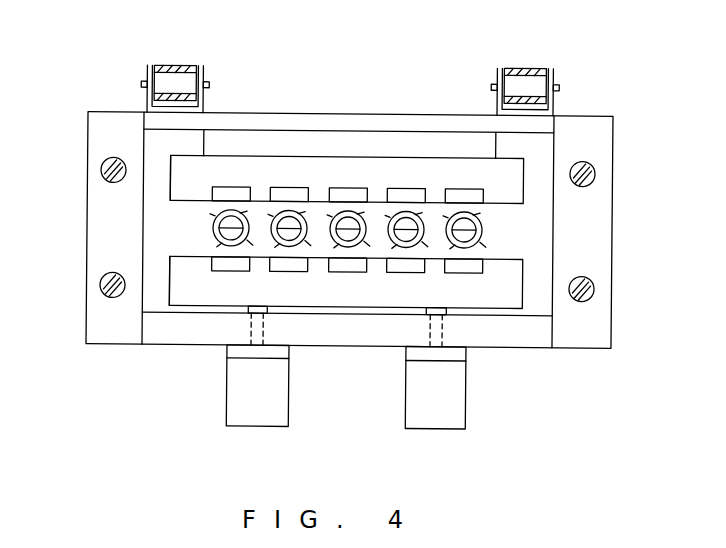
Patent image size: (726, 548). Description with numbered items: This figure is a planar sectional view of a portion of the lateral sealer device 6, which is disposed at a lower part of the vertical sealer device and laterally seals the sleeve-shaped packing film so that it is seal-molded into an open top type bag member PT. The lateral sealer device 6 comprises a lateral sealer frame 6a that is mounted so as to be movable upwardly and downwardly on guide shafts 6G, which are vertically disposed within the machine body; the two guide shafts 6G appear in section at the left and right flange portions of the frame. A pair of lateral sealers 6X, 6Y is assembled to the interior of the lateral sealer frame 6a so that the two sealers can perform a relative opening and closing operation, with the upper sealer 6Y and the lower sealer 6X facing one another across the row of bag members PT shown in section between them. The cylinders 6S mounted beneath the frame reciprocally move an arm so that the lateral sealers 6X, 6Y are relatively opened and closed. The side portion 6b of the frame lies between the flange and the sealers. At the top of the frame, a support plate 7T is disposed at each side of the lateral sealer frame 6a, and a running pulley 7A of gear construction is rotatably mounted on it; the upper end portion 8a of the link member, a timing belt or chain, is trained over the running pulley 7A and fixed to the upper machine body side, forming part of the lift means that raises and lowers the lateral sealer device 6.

The lateral sealer device 6 is at (150, 367).
The lateral sealer frame 6a is at (289, 118).
The side pillar of terminal block 6b is at (155, 222).
The guide shafts 6G is at (595, 183).
The cylinder 6S is at (240, 408).
The lateral sealer 6X is at (355, 295).
The lateral sealer 6Y is at (351, 165).
The running pulley 7A is at (143, 72).
The support plate 7T is at (145, 95).
The upper end portion of link member 8a is at (175, 80).
The open top type bag member PT is at (425, 213).